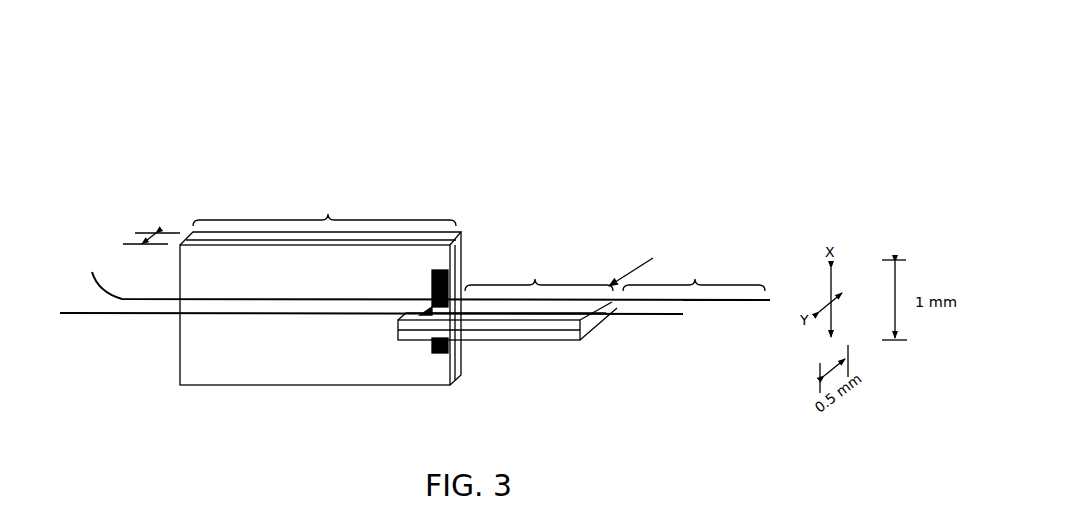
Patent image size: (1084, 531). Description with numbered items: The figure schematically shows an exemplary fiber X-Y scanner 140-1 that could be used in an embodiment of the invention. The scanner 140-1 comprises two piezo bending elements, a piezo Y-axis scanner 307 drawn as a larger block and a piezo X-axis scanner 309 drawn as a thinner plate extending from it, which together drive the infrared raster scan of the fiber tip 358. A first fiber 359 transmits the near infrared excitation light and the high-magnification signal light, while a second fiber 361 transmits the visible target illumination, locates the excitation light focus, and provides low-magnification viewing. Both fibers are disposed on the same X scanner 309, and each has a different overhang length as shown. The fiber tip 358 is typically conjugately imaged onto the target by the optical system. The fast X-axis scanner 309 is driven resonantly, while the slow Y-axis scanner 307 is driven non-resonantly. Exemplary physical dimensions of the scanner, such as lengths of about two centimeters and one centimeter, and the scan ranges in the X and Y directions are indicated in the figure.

The fiber X-Y scanner 140-1 is at (674, 52).
The piezo Y-axis scanner 307 is at (320, 320).
The piezo X-axis scanner 309 is at (507, 346).
The second fiber 361 is at (148, 298).
The first fiber 359 is at (130, 318).
The fiber tip 358 is at (726, 325).